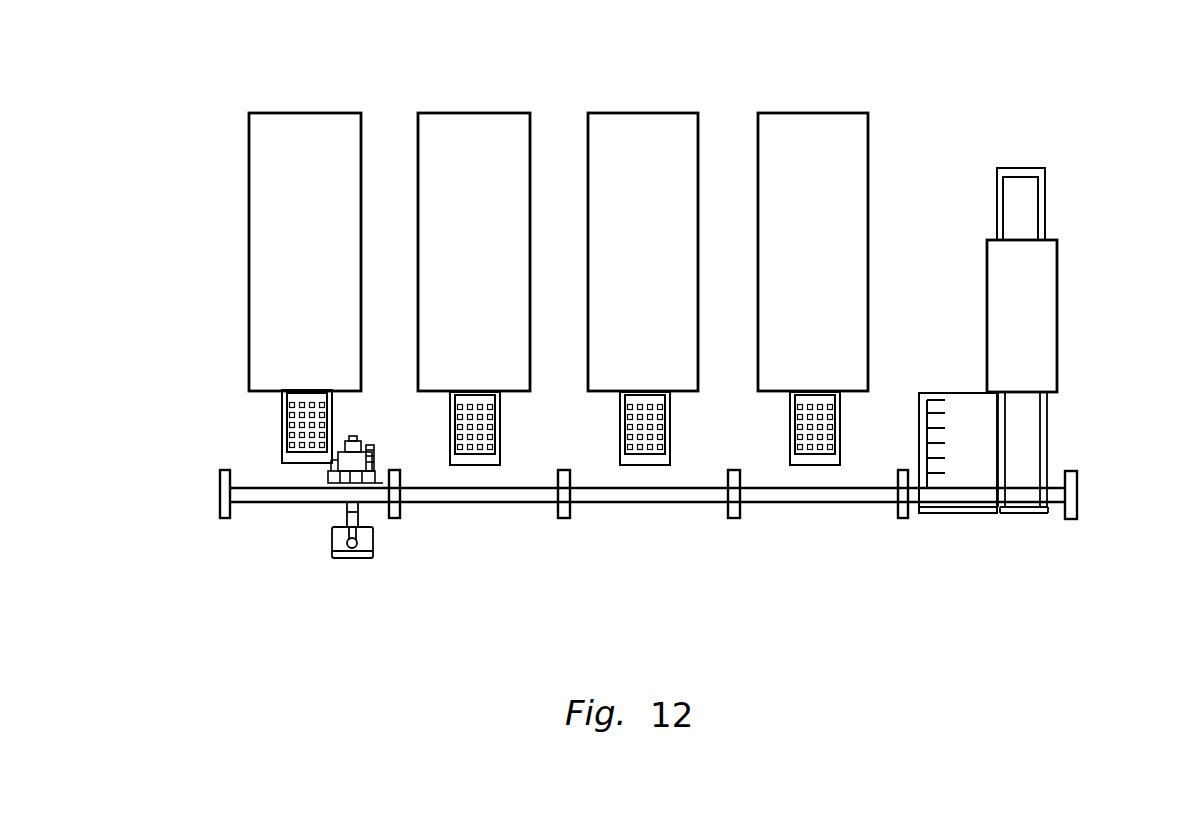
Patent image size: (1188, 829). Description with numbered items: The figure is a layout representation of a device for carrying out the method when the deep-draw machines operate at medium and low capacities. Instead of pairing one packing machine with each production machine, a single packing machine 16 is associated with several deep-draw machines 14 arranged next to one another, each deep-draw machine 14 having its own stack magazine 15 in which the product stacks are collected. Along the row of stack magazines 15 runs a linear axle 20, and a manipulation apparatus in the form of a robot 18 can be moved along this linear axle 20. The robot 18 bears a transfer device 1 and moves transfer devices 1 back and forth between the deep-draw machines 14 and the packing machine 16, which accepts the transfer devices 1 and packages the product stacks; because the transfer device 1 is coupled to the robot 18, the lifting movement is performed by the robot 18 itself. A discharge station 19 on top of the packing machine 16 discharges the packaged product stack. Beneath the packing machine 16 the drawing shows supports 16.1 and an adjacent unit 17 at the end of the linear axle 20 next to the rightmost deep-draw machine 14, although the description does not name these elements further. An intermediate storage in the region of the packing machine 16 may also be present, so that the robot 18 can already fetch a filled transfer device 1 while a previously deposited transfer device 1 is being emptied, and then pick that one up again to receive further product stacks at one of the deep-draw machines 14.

The transfer device 1 is at (373, 553).
The deep-draw machine 14 is at (280, 155).
The stack magazine 15 is at (292, 425).
The packing machine 16 is at (1022, 313).
The supply unit supports 16.1 is at (1027, 443).
The container unit 17 is at (968, 468).
The robot 18 is at (335, 483).
The discharge station 19 is at (1025, 210).
The linear axle 20 is at (602, 495).